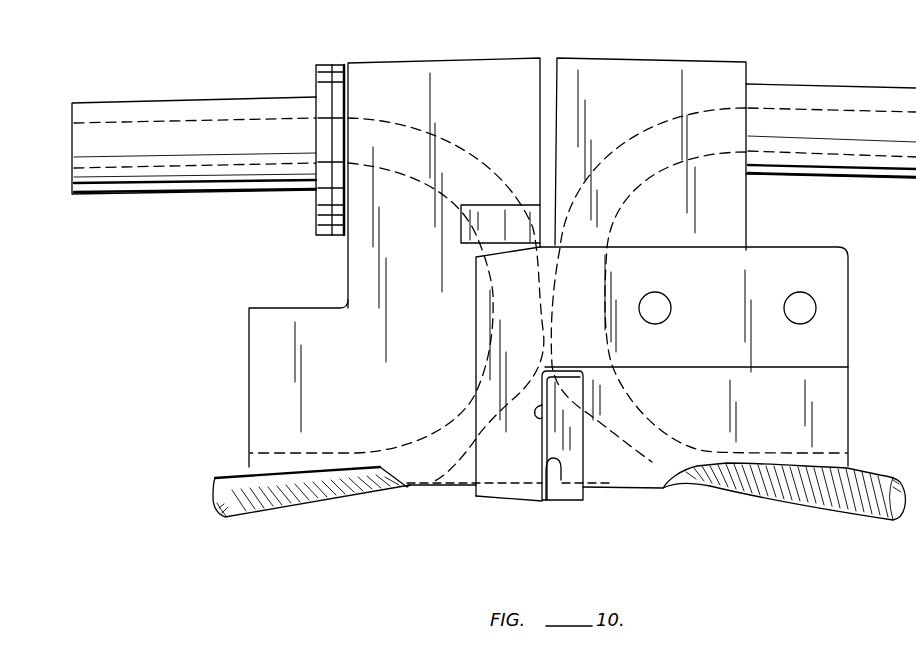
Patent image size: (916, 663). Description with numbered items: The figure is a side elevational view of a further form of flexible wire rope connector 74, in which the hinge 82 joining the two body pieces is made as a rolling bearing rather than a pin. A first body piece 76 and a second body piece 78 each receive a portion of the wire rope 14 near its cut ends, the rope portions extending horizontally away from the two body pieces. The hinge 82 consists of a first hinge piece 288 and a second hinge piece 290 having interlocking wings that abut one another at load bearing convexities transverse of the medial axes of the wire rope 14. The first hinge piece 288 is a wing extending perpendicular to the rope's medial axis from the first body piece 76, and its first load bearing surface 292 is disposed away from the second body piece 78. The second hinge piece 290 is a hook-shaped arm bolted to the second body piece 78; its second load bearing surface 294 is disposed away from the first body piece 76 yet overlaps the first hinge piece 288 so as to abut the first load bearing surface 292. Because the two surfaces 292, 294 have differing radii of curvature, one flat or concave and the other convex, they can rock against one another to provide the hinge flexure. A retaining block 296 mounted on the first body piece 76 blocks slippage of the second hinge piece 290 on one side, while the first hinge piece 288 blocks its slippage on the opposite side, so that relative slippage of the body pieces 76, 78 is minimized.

The rope connector 74 is at (478, 30).
The first body piece 76 is at (249, 398).
The second body piece 78 is at (848, 420).
The hinge 82 is at (532, 500).
The wire rope 14 is at (298, 506).
The first hinge piece 288 is at (583, 440).
The second hinge piece 290 is at (477, 418).
The first load bearing surface 292 is at (542, 405).
The second load bearing surface 294 is at (549, 480).
The retaining block 296 is at (508, 203).